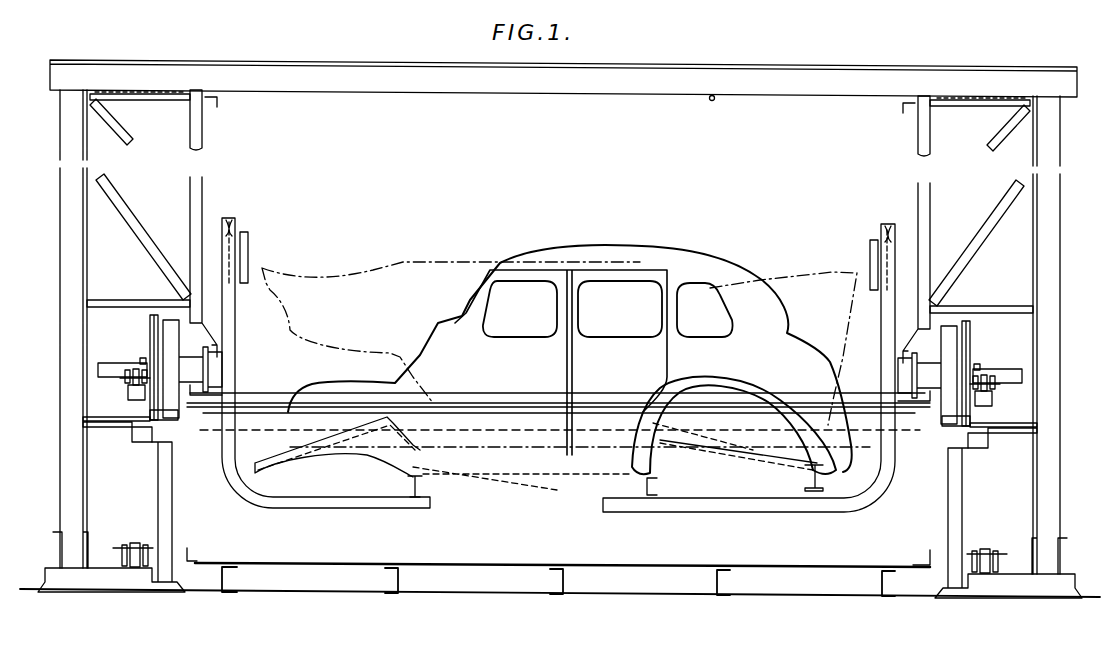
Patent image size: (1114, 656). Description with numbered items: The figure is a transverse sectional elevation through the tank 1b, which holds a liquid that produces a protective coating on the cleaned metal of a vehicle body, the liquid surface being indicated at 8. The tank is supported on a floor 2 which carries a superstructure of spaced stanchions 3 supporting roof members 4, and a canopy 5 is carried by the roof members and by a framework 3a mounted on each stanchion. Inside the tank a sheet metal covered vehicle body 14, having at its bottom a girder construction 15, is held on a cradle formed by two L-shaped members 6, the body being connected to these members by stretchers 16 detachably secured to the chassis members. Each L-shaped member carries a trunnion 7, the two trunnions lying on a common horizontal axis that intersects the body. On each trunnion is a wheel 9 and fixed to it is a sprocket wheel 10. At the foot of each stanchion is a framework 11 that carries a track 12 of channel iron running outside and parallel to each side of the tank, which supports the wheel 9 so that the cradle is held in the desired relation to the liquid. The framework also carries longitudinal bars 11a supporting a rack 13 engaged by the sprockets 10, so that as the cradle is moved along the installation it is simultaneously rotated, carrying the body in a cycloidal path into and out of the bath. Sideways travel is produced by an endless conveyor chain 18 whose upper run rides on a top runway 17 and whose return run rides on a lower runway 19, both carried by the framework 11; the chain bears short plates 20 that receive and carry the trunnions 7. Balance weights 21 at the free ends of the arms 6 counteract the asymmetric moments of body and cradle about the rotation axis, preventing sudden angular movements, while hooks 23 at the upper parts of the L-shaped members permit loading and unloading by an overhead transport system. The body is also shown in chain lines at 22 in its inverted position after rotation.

The tank 1b is at (450, 563).
The floor 2 is at (593, 593).
The stanchions 3 is at (70, 210).
The framework 3a is at (148, 155).
The roof members 4 is at (393, 70).
The canopy 5 is at (710, 97).
The L-shaped members 6 is at (228, 336).
The trunnion 7 is at (107, 365).
The surface of the protective coating liquid 8 is at (270, 410).
The wheel 9 is at (170, 327).
The sprocket wheel 10 is at (93, 300).
The framework 11 is at (163, 458).
The longitudinal bars 11a is at (140, 442).
The track 12 is at (167, 418).
The rack 13 is at (147, 417).
The vehicle body 14 is at (550, 375).
The girder construction 15 is at (437, 388).
The stretchers 16 is at (420, 497).
The top runway 17 is at (128, 388).
The conveyor chain 18 is at (127, 378).
The runway 19 is at (135, 560).
The short plates 20 is at (143, 362).
The balance weights 21 is at (248, 246).
The body in inverted position 22 is at (559, 314).
The hooks 23 is at (238, 222).